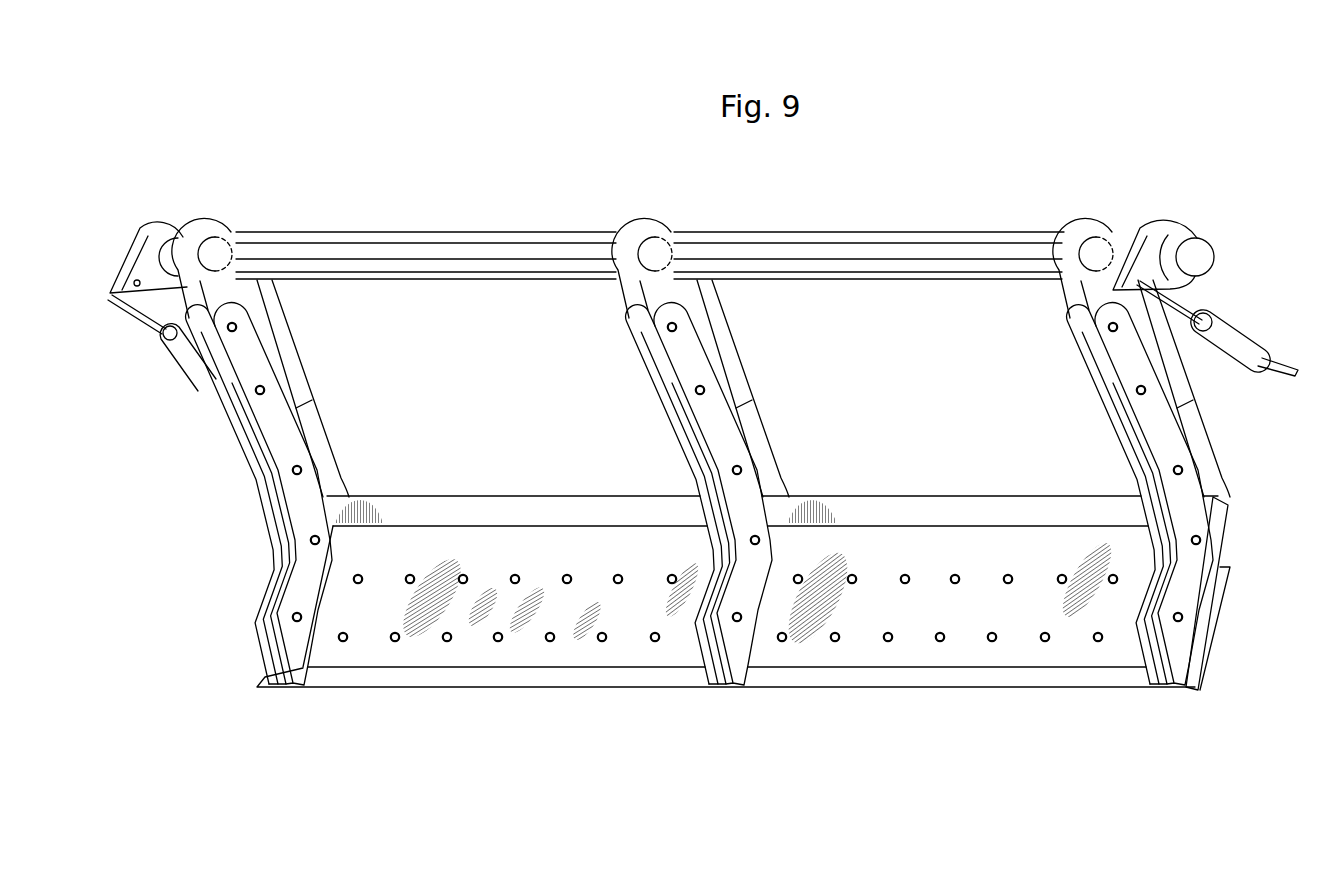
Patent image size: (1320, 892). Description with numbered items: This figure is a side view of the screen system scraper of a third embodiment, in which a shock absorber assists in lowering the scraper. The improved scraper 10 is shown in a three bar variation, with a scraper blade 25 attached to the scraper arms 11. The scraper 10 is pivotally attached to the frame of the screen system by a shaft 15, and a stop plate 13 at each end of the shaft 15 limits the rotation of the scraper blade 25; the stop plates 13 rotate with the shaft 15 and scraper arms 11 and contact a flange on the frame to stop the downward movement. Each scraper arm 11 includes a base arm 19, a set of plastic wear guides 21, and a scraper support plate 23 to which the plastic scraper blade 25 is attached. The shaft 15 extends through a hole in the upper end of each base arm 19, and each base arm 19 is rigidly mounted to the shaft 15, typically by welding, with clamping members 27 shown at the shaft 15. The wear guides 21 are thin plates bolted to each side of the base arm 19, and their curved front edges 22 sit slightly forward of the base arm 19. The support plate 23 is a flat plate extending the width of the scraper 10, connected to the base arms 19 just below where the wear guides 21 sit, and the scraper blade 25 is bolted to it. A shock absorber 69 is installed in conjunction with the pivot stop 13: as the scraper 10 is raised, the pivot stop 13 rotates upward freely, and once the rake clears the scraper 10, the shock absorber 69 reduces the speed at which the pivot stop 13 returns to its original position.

The scraper 10 is at (854, 165).
The scraper arm 11 is at (229, 481).
The stop plate 13 is at (166, 222).
The shaft 15 is at (927, 233).
The base arm 19 is at (301, 352).
The wear guide 21 is at (305, 421).
The curved front edge 22 is at (262, 513).
The scraper support plate 23 is at (832, 505).
The scraper blade 25 is at (438, 690).
The tube clamp 27 is at (218, 252).
The shock absorber 69 is at (185, 358).